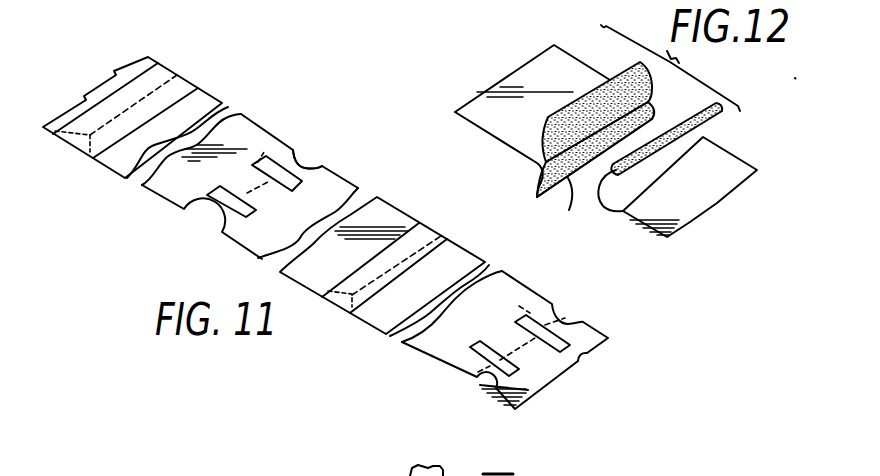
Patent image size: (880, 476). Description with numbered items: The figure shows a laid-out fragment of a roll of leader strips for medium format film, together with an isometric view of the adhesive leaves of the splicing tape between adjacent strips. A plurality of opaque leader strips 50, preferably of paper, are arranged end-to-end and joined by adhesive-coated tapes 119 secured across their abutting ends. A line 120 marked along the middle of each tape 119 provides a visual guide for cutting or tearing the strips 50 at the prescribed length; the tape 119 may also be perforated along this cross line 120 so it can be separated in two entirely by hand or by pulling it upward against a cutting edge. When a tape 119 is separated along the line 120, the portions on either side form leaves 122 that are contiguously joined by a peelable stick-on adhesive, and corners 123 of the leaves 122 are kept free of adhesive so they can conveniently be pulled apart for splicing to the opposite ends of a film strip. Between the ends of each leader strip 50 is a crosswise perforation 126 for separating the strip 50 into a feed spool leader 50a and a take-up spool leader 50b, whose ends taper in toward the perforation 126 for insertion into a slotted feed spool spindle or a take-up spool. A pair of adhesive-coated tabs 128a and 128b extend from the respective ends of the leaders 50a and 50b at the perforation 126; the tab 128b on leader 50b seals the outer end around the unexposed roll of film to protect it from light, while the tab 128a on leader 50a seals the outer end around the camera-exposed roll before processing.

In FIG. 11, the leader strip 50 is at (118, 171).
In FIG. 11, the feed spool leader 50a is at (213, 107).
In FIG. 12, the feed spool leader 50a is at (737, 184).
In FIG. 11, the take-up spool leader 50b is at (276, 267).
In FIG. 12, the take-up spool leader 50b is at (543, 62).
In FIG. 11, the adhesive-coated tape 119 is at (165, 73).
In FIG. 11, the line 120 is at (165, 73).
In FIG. 12, the leaves 122 is at (567, 106).
In FIG. 11, the corners 123 is at (348, 292).
In FIG. 12, the corners 123 is at (542, 117).
In FIG. 11, the crosswise perforation 126 is at (313, 168).
In FIG. 11, the tab 128a is at (217, 193).
In FIG. 11, the tab 128b is at (291, 177).